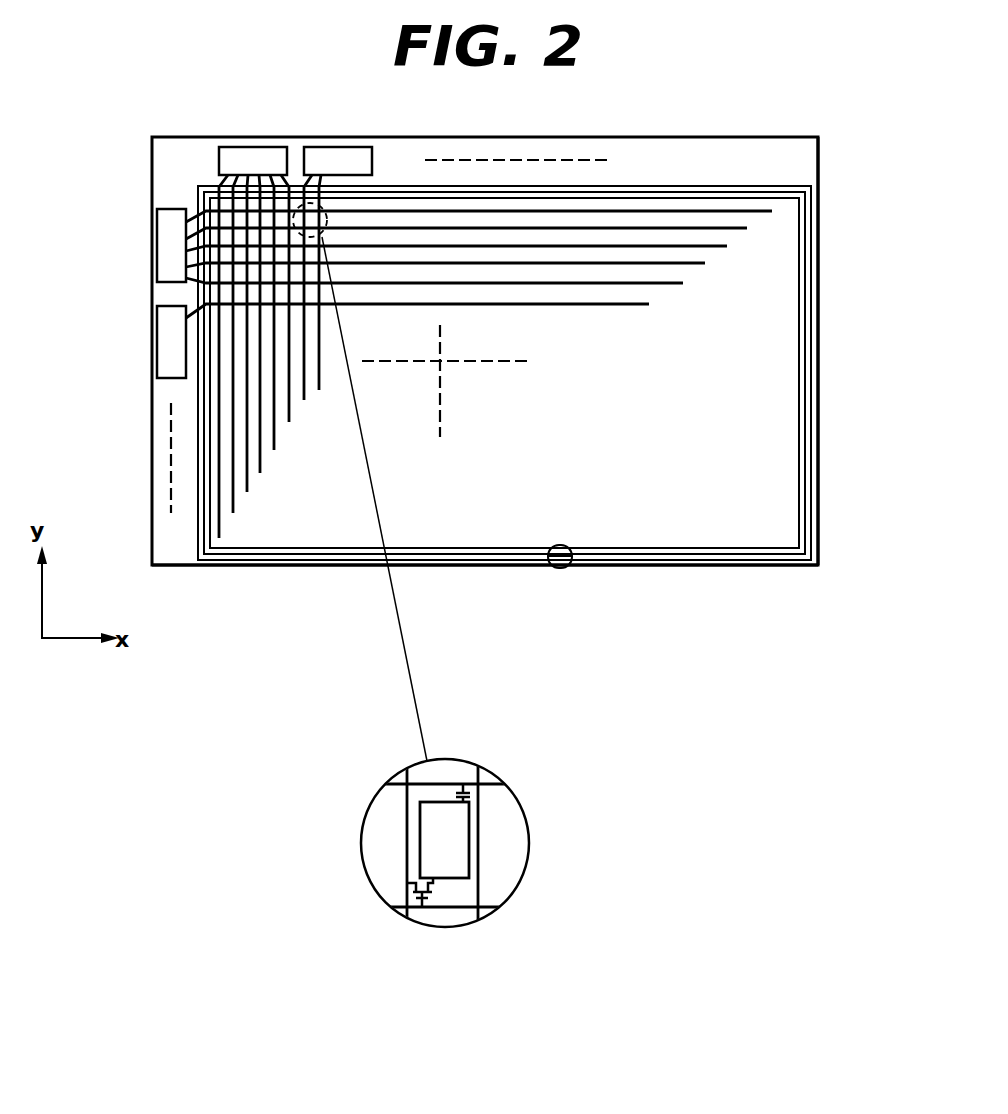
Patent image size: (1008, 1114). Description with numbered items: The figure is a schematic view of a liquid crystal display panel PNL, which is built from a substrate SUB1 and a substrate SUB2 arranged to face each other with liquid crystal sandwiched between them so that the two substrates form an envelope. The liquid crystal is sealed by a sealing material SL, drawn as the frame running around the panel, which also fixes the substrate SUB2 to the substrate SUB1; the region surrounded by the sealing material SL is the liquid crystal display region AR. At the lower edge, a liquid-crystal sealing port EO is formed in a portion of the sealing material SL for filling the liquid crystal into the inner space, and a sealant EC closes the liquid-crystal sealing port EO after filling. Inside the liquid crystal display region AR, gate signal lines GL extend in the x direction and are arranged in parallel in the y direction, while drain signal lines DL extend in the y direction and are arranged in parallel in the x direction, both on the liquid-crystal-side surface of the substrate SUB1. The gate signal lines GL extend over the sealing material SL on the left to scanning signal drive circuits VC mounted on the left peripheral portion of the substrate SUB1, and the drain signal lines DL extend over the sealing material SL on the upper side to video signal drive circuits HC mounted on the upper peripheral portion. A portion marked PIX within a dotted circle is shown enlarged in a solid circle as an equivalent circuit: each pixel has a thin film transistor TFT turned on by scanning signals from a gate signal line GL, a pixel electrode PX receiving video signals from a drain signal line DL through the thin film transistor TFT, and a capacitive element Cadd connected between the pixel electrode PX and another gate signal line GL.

The liquid crystal display panel PNL is at (538, 351).
The sealing material SL is at (813, 375).
The substrate SUB1 is at (668, 567).
The substrate SUB2 is at (785, 563).
The video signal drive circuit HC is at (330, 158).
The scanning signal drive circuit VC is at (162, 336).
The gate signal line GL is at (608, 305).
The drain signal line DL is at (275, 430).
The pixel portion PIX is at (328, 233).
The liquid crystal display region AR is at (460, 382).
The liquid-crystal sealing port EO is at (548, 570).
The sealant EC is at (565, 570).
The pixel electrode PX is at (430, 860).
The capacitive element Cadd is at (472, 795).
The thin film transistor TFT is at (408, 895).